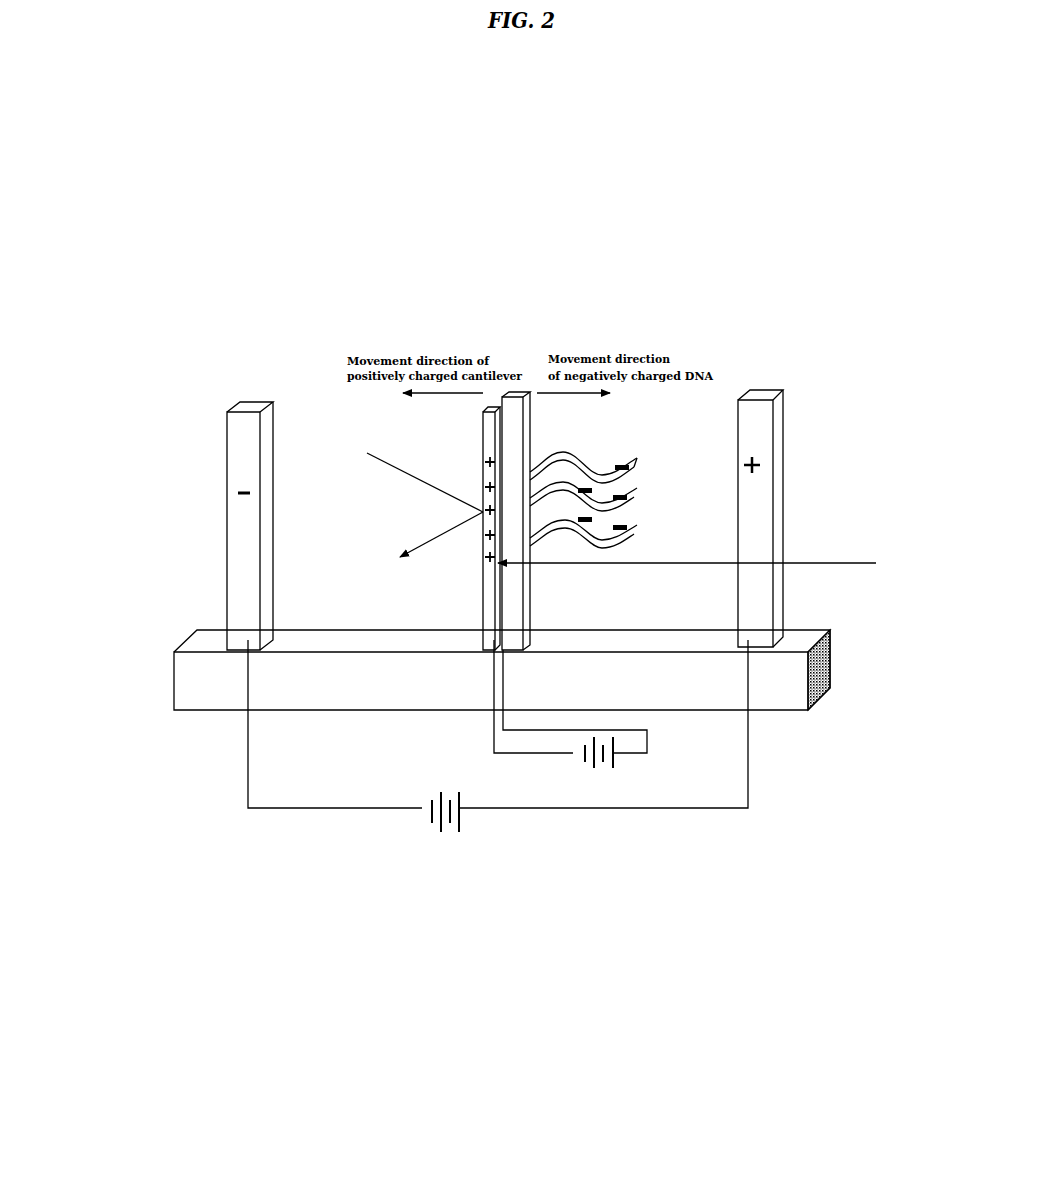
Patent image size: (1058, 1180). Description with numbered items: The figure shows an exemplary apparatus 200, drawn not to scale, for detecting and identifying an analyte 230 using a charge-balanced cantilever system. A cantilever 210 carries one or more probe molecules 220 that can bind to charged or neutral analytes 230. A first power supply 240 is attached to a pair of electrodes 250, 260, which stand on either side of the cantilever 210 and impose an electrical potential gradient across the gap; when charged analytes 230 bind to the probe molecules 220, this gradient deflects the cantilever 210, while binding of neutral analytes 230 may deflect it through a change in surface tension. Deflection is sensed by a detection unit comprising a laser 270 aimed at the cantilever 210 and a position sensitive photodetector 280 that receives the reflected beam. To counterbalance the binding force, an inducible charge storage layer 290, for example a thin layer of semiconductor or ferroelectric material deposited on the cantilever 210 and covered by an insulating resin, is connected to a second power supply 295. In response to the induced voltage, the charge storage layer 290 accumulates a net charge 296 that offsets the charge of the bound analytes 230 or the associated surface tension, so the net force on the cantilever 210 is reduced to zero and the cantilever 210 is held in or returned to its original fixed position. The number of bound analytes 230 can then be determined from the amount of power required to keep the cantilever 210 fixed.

The apparatus 200 is at (548, 1000).
The cantilever 210 is at (510, 413).
The probe molecules 220 is at (638, 478).
The analyte 230 is at (638, 523).
The first power supply 240 is at (437, 837).
The electrode 250 is at (246, 547).
The electrode 260 is at (757, 598).
The laser 270 is at (391, 473).
The position sensitive photodetector 280 is at (394, 548).
The inducible charge storage layer 290 is at (482, 443).
The second power supply 295 is at (613, 777).
The net charge 296 is at (713, 558).